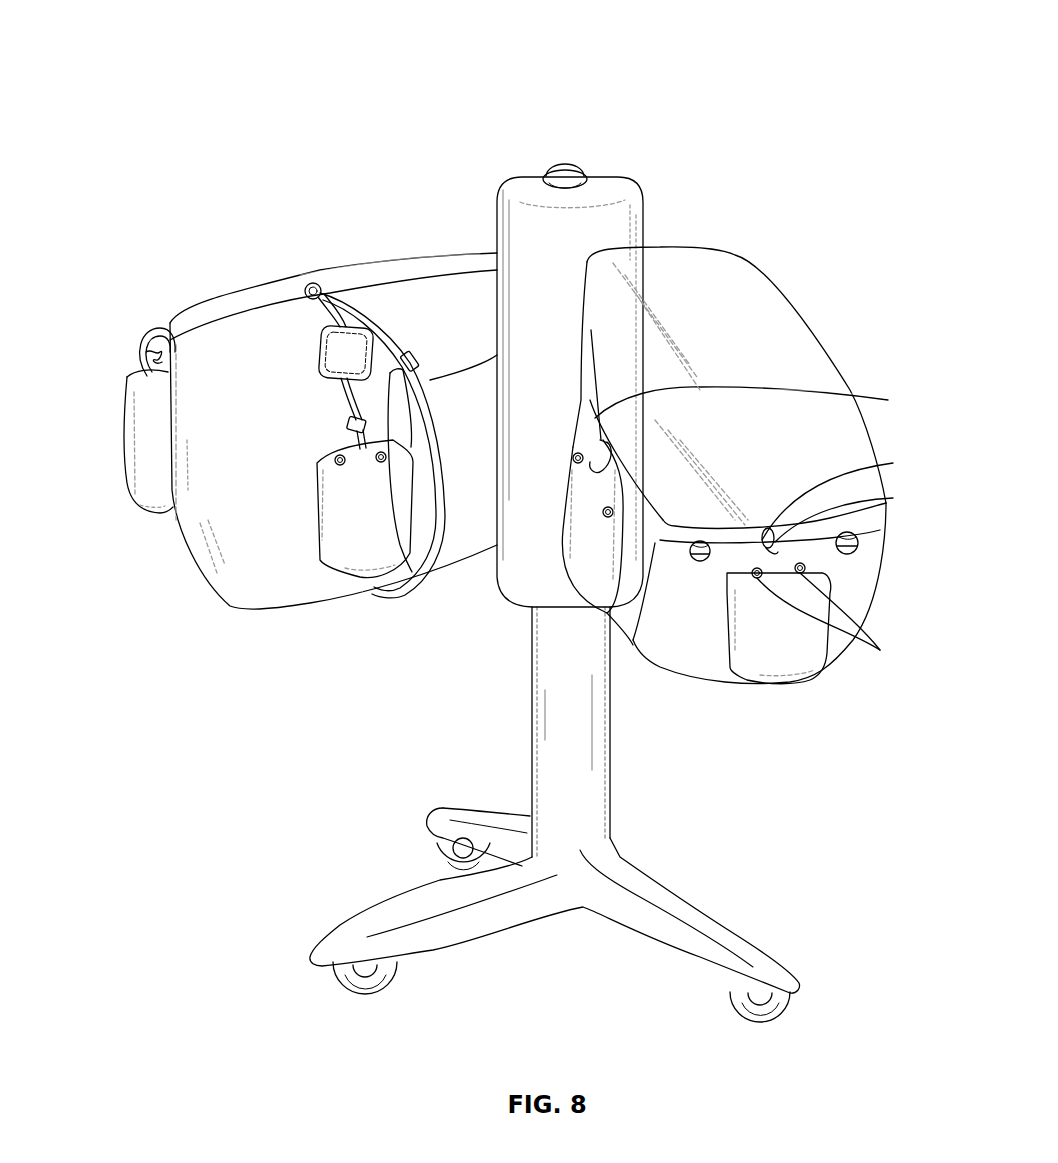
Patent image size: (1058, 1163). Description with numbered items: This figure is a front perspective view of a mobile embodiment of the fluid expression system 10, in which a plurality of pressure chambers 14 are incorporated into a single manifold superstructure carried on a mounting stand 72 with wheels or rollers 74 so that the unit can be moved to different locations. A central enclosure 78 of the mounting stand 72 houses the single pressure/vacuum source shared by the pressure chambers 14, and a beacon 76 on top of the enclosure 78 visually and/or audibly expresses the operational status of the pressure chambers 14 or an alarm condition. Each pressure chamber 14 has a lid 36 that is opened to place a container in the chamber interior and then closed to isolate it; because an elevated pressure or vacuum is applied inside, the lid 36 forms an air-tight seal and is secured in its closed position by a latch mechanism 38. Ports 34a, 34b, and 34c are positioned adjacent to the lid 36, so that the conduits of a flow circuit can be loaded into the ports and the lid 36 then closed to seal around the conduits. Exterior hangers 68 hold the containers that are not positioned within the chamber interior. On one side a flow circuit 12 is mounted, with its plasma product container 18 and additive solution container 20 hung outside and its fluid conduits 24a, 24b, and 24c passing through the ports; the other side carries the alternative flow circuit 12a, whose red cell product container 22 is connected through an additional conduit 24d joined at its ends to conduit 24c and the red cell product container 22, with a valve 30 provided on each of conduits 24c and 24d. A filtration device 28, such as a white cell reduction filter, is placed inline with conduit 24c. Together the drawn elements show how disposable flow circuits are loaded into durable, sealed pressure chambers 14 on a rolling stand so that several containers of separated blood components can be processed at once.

The fluid expression system 10 is at (702, 55).
The flow circuit 12 is at (735, 648).
The alternative flow circuit 12a is at (326, 566).
The pressure chamber 14 is at (362, 254).
The plasma product container 18 is at (580, 563).
The additive solution container 20 is at (151, 498).
The red cell product container 22 is at (327, 503).
The fluid conduit 24a is at (860, 397).
The fluid conduit 24b is at (143, 335).
The fluid conduit 24c is at (353, 393).
The additional conduit 24d is at (420, 383).
The filtration device 28 is at (333, 353).
The valve 30 is at (410, 580).
The port 34a is at (607, 442).
The port 34b is at (163, 338).
The port 34c is at (313, 283).
The lid 36 is at (445, 258).
The latch mechanism 38 is at (697, 565).
The exterior hangers 68 is at (828, 621).
The mounting stand 72 is at (555, 742).
The wheels 74 is at (437, 841).
The beacon 76 is at (567, 170).
The enclosure 78 is at (626, 228).